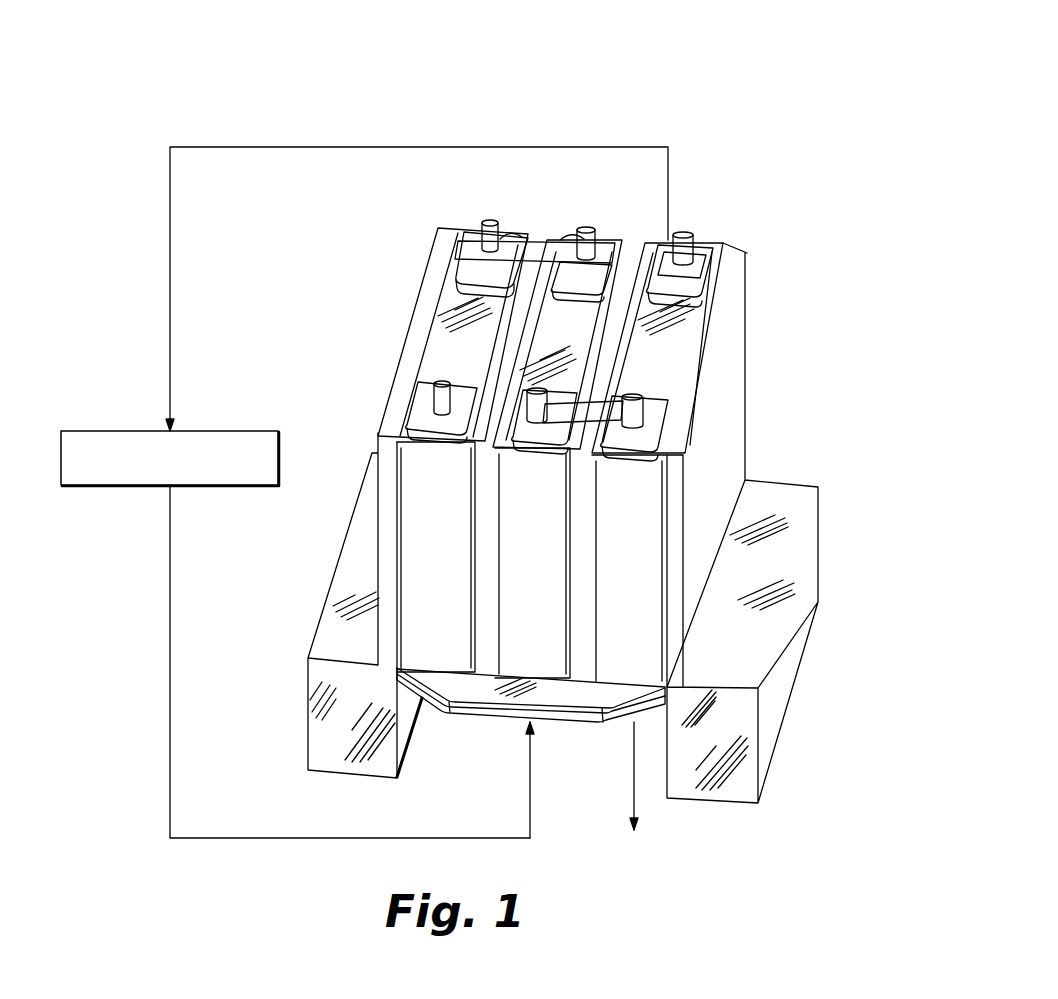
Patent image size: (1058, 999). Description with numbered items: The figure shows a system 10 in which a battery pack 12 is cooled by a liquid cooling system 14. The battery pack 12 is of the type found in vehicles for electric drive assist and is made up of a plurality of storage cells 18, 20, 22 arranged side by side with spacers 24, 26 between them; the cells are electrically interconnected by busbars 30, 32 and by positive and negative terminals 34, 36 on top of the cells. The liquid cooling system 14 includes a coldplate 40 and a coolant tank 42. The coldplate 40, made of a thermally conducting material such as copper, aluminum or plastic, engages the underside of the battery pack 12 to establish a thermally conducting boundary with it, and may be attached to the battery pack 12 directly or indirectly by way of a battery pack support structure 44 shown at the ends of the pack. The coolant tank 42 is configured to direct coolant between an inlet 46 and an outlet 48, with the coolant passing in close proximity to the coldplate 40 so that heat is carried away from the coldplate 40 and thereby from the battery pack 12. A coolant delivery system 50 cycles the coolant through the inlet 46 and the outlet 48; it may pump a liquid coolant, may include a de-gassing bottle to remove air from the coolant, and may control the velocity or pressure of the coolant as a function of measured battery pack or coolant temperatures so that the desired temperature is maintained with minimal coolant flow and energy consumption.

The system 10 is at (730, 66).
The battery pack 12 is at (710, 190).
The liquid cooling system 14 is at (482, 777).
The storage cell 18 is at (445, 360).
The storage cell 20 is at (553, 338).
The storage cell 22 is at (645, 364).
The spacer 24 is at (532, 282).
The spacer 26 is at (630, 284).
The busbar 30 is at (473, 248).
The busbar 32 is at (647, 420).
The positive terminal 34 is at (697, 257).
The negative terminal 36 is at (422, 407).
The coldplate 40 is at (458, 683).
The coolant tank 42 is at (502, 718).
The battery pack support structure 44 is at (820, 561).
The inlet 46 is at (530, 802).
The outlet 48 is at (633, 767).
The coolant delivery system 50 is at (117, 431).